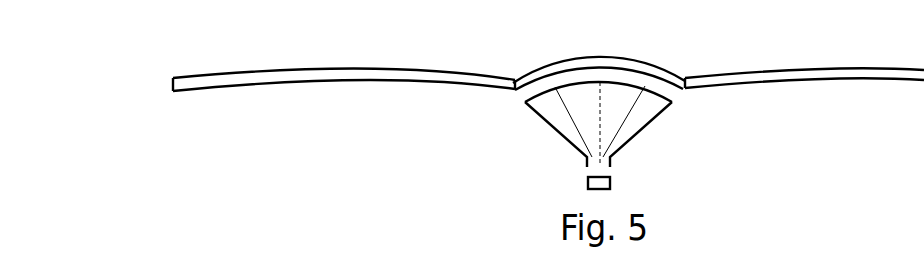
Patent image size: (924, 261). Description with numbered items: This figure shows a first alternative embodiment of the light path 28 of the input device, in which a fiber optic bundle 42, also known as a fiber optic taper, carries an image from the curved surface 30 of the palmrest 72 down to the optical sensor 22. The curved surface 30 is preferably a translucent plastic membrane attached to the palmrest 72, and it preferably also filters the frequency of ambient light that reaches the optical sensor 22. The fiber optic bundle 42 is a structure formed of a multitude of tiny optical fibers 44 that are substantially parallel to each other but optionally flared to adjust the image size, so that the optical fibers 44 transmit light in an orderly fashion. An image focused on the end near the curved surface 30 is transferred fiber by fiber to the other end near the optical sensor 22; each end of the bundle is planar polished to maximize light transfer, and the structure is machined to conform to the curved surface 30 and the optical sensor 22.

The optical sensor 22 is at (612, 182).
The light path 28 is at (717, 92).
The curved surface 30 is at (625, 56).
The fiber optic bundle 42 is at (637, 117).
The optical fibers 44 is at (612, 130).
The palmrest 72 is at (770, 70).